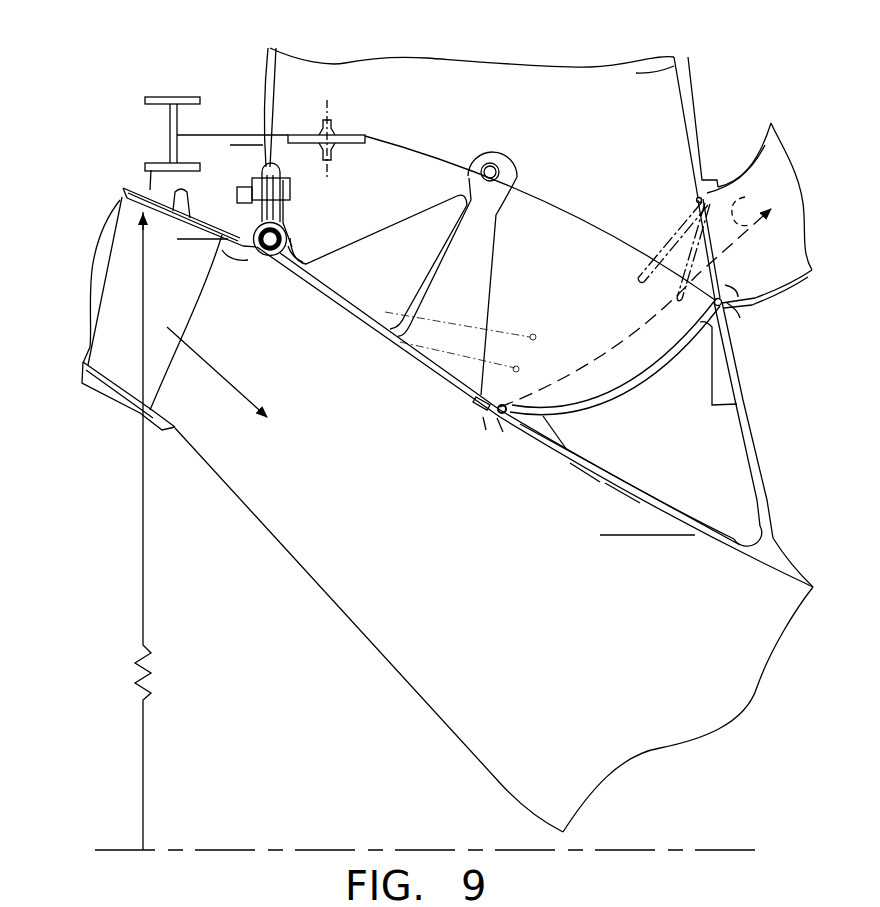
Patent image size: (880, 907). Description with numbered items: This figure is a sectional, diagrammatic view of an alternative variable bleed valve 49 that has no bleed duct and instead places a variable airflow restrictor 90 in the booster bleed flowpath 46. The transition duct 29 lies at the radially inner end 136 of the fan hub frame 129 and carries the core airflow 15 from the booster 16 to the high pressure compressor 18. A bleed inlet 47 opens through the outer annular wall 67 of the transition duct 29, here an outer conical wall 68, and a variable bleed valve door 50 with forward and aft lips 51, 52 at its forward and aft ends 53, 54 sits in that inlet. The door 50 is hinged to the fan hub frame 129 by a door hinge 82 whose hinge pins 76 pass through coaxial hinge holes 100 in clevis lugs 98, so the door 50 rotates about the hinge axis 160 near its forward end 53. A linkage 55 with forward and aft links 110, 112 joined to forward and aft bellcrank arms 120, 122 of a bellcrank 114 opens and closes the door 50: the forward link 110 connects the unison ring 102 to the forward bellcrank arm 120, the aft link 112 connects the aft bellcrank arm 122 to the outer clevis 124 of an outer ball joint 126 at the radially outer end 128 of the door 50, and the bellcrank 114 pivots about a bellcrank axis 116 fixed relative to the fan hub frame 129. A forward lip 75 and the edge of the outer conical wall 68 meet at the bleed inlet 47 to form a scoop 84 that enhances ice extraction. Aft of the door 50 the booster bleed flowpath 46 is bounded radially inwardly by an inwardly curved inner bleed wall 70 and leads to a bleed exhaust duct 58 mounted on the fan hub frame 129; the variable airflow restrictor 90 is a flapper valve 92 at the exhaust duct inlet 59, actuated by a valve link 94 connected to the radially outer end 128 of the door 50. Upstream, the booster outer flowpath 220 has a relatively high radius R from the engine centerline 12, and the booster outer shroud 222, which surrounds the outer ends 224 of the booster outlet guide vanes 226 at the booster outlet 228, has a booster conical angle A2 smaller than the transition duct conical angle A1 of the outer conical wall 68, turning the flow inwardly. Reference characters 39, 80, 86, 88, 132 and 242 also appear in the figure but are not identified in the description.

The engine centerline 12 is at (215, 850).
The radius R is at (147, 725).
The core airflow 15 is at (220, 372).
The booster 16 is at (75, 296).
The high pressure compressor 18 is at (697, 782).
The transition duct 29 is at (571, 632).
The fan case 39 is at (120, 281).
The booster bleed flowpath 46 is at (759, 196).
The bleed inlet 47 is at (474, 426).
The variable bleed valve 49 is at (415, 196).
The variable bleed valve door 50 is at (340, 290).
The forward lip 51 is at (232, 245).
The aft lip 52 is at (495, 410).
The forward end 53 is at (223, 186).
The aft end 54 is at (443, 352).
The linkage 55 is at (404, 84).
The bleed exhaust duct 58 is at (770, 300).
The exhaust duct inlet 59 is at (727, 318).
The outer annular wall 67 is at (572, 465).
The outer conical wall 68 is at (607, 485).
The inner bleed wall 70 is at (568, 410).
The forward lip 75 is at (500, 434).
The hinge pin 76 is at (290, 230).
The frame bar 80 is at (700, 158).
The door hinge 82 is at (281, 172).
The scoop 84 is at (483, 427).
The beam 86 is at (424, 366).
The strut 88 is at (721, 258).
The variable airflow restrictor 90 is at (668, 200).
The flapper valve 92 is at (726, 306).
The valve link 94 is at (640, 258).
The clevis lug 98 is at (293, 246).
The hinge hole 100 is at (292, 190).
The unison ring 102 is at (170, 128).
The forward link 110 is at (262, 135).
The aft link 112 is at (440, 140).
The bellcrank 114 is at (333, 150).
The bellcrank axis 116 is at (329, 106).
The forward bellcrank arm 120 is at (266, 145).
The aft bellcrank arm 122 is at (340, 135).
The outer clevis 124 is at (511, 163).
The outer ball joint 126 is at (497, 168).
The radially outer end 128 is at (506, 223).
The fan hub frame 129 is at (760, 450).
The outer wall 132 is at (689, 62).
The radially inner end 136 is at (663, 465).
The hinge axis 160 is at (262, 252).
The booster outer flowpath 220 is at (124, 199).
The booster outer shroud 222 is at (227, 243).
The outer ends 224 is at (150, 190).
The booster outlet guide vanes 226 is at (180, 305).
The booster outlet 228 is at (181, 401).
The fastener 242 is at (478, 405).
The transition duct conical angle A1 is at (637, 582).
The booster conical angle A2 is at (188, 243).